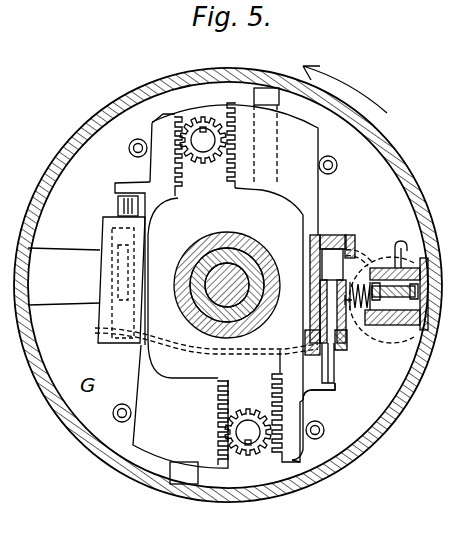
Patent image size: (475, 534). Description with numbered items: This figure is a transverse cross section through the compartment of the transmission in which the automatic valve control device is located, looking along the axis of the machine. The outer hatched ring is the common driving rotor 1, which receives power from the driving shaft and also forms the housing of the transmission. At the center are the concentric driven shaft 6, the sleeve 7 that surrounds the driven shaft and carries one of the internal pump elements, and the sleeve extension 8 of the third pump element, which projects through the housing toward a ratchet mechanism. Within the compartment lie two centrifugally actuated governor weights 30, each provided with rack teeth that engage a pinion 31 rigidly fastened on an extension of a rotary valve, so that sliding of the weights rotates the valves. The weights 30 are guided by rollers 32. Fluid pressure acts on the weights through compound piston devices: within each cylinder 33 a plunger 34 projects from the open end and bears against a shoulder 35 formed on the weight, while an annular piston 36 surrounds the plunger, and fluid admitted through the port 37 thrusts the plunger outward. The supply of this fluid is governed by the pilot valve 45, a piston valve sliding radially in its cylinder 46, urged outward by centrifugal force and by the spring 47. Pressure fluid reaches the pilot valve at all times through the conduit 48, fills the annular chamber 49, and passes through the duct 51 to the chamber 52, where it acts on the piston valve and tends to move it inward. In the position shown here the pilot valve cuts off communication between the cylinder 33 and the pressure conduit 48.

The rotor 1 is at (413, 157).
The driven shaft 6 is at (233, 298).
The sleeve 7 is at (243, 260).
The sleeve extension 8 is at (214, 256).
The governor weight 30 is at (225, 286).
The pinion 31 is at (213, 99).
The roller 32 is at (128, 149).
The cylinder 33 is at (108, 306).
The plunger 34 is at (330, 368).
The shoulder 35 is at (318, 395).
The piston 36 is at (340, 320).
The port 37 is at (367, 234).
The pilot valve 45 is at (405, 272).
The cylinder 46 is at (402, 262).
The spring 47 is at (360, 287).
The conduit 48 is at (362, 300).
The annular chamber 49 is at (428, 324).
The duct 51 is at (428, 297).
The chamber 52 is at (400, 290).